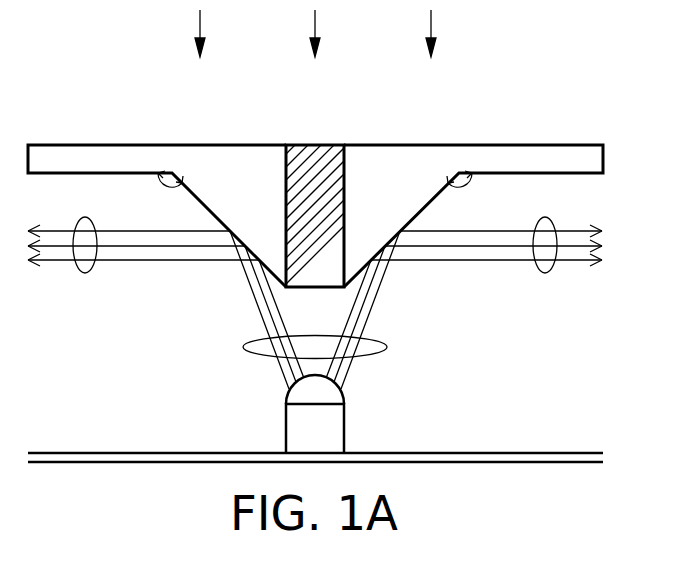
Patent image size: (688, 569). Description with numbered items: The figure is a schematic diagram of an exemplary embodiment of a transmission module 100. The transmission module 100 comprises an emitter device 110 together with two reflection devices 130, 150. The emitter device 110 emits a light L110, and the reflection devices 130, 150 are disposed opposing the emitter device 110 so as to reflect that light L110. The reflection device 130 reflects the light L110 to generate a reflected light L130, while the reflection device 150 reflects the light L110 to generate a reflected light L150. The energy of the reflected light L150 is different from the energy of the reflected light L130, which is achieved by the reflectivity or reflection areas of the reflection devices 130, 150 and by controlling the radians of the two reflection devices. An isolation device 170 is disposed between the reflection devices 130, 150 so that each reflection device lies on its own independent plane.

The transmission module 100 is at (517, 113).
The emitter device 110 is at (345, 423).
The reflection device 130 is at (399, 165).
The reflection device 150 is at (230, 166).
The isolation device 170 is at (312, 165).
The light L110 is at (387, 347).
The reflected light L130 is at (546, 275).
The reflected light L150 is at (85, 273).